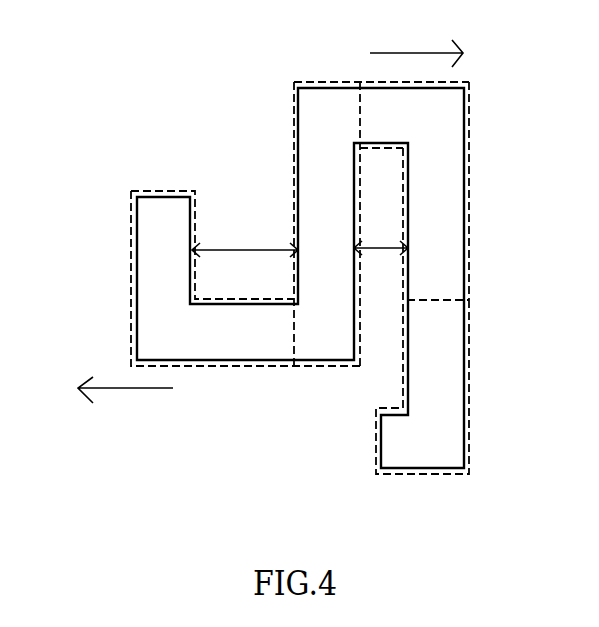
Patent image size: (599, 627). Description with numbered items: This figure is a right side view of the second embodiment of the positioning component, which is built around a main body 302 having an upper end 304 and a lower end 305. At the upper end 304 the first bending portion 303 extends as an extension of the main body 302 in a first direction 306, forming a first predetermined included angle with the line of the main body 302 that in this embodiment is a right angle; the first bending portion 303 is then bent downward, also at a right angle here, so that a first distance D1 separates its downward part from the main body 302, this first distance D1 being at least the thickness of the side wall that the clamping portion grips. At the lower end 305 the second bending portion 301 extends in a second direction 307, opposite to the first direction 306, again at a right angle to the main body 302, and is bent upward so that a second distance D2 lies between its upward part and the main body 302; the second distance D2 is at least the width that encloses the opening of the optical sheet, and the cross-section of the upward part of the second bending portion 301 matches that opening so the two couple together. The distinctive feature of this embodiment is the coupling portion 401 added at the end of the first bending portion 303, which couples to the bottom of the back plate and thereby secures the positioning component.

The second bending portion 301 is at (132, 215).
The main body 302 is at (295, 193).
The first bending portion 303 is at (469, 193).
The upper end 304 is at (325, 115).
The lower end 305 is at (328, 343).
The first direction 306 is at (418, 53).
The second direction 307 is at (132, 388).
The coupling portion 401 is at (468, 427).
The first distance D1 is at (381, 231).
The second distance D2 is at (245, 232).